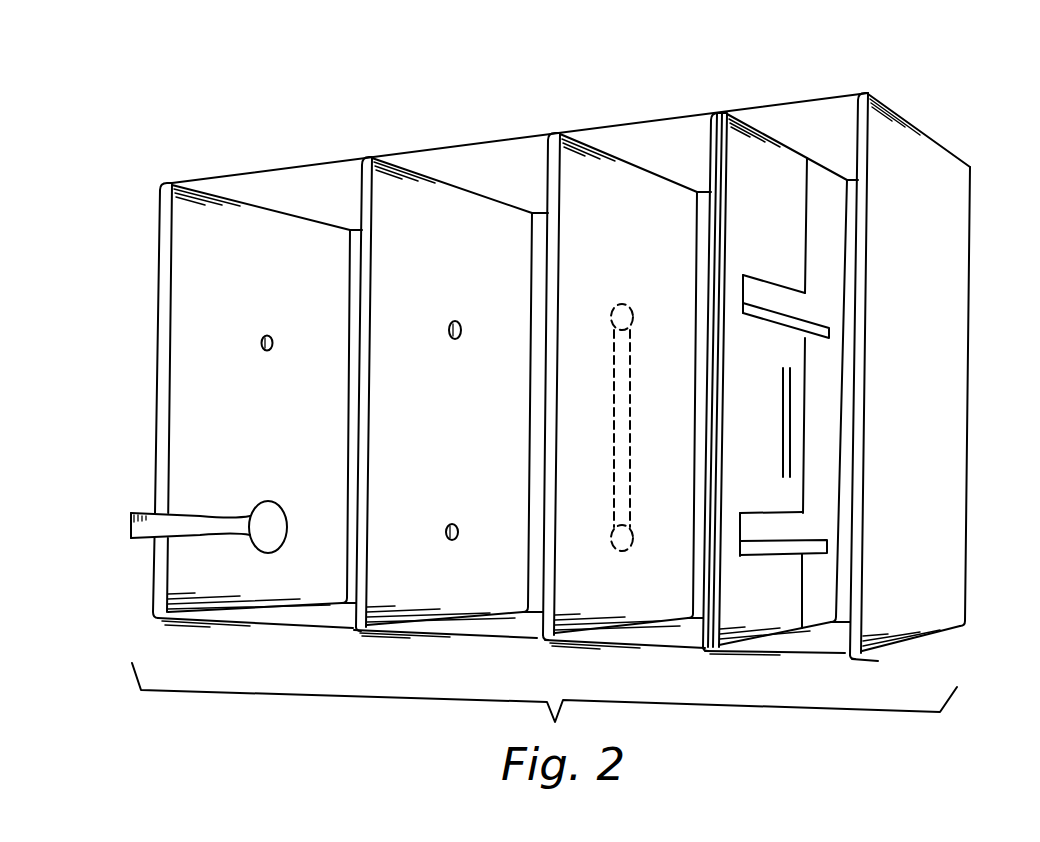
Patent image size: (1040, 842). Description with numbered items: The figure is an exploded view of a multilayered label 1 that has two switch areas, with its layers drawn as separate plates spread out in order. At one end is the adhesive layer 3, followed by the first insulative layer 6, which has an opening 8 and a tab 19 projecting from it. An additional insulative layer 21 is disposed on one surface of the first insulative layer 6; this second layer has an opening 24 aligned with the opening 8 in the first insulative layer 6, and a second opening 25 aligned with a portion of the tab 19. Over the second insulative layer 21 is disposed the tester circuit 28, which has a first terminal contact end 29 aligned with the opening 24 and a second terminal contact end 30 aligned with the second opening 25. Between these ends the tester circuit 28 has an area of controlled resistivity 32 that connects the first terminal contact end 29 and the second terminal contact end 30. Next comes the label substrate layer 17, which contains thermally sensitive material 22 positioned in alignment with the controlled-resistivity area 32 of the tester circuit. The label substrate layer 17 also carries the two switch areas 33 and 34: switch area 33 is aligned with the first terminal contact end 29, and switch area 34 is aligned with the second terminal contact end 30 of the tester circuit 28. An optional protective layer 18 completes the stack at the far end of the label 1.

The label 1 is at (166, 157).
The adhesive layer 3 is at (157, 333).
The insulative layer 6 is at (190, 195).
The opening 8 is at (276, 337).
The tab 19 is at (168, 512).
The additional insulative layer 21 is at (387, 170).
The opening 24 is at (462, 322).
The second opening 25 is at (460, 522).
The tester circuit 28 is at (619, 431).
The first terminal contact end 29 is at (632, 303).
The second terminal contact end 30 is at (615, 552).
The area of controlled resistivity 32 is at (610, 463).
The label substrate layer 17 is at (735, 128).
The switch area 33 is at (766, 296).
The switch area 34 is at (778, 530).
The thermally sensitive material 22 is at (783, 418).
The protective layer 18 is at (892, 115).